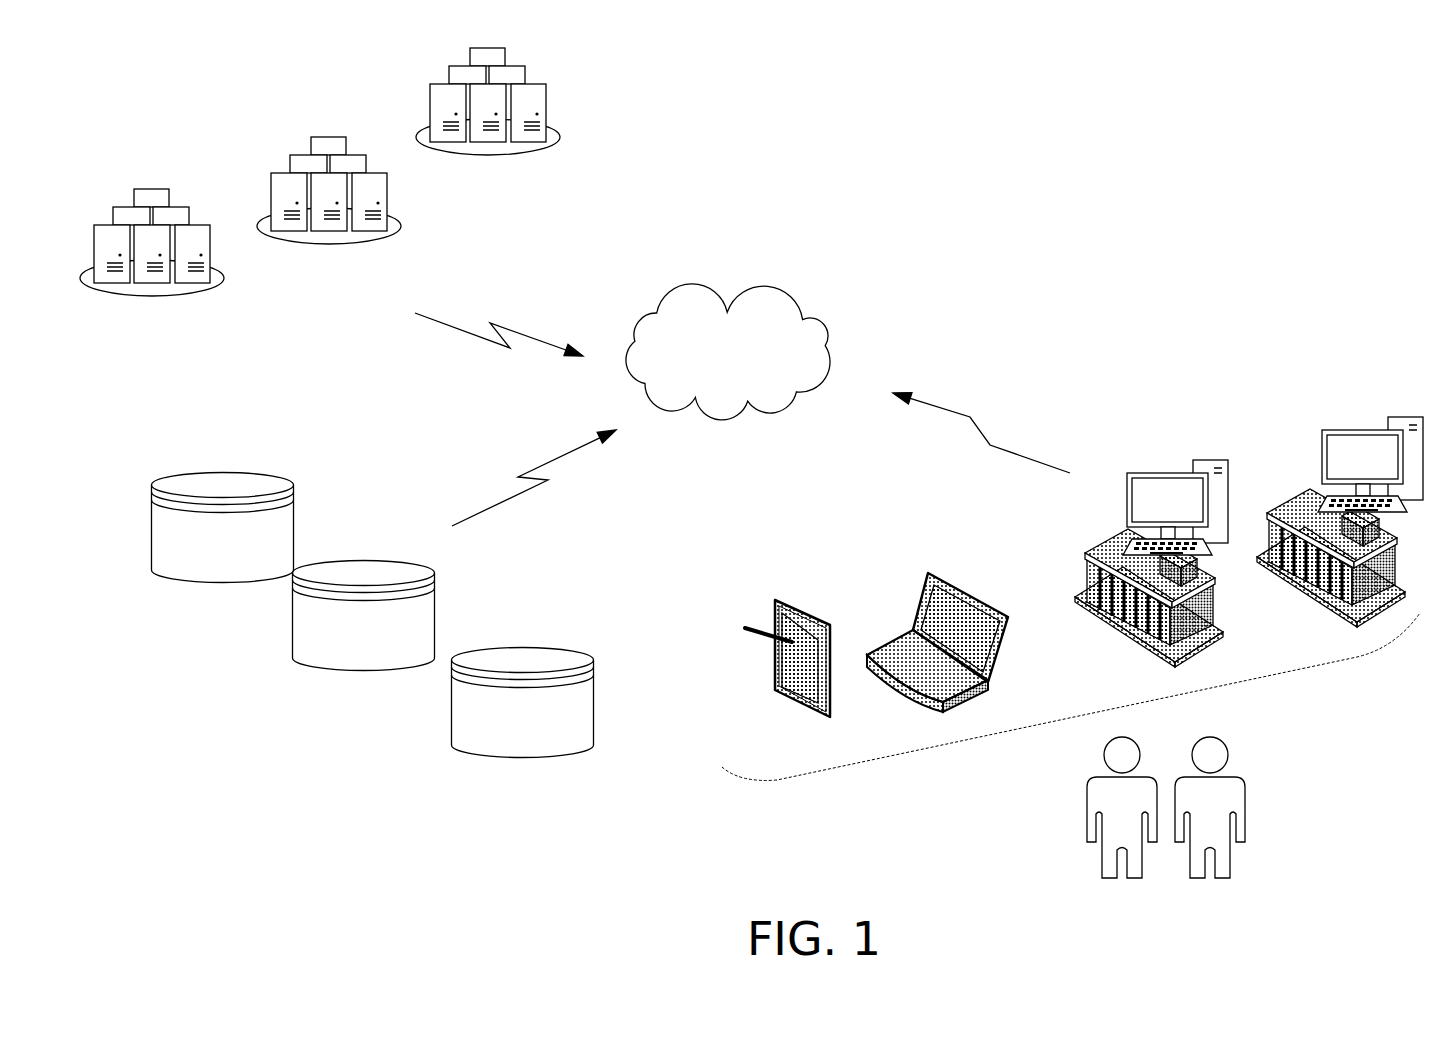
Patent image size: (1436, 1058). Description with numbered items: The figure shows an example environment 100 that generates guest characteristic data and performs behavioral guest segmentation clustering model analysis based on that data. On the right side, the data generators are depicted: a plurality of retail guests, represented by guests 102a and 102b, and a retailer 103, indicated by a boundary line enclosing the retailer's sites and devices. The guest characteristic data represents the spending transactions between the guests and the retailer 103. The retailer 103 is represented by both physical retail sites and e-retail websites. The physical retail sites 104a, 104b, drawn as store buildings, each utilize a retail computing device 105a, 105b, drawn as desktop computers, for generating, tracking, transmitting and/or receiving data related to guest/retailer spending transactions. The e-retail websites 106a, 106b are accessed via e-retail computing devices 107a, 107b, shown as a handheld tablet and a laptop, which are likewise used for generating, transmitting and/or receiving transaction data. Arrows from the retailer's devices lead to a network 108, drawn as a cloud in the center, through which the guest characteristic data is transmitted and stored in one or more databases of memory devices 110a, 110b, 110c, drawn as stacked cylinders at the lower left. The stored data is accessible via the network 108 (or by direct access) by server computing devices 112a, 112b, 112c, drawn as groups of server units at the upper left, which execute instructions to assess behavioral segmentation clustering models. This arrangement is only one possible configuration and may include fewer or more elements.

The environment 100 is at (1002, 184).
The guest 102a is at (1087, 805).
The guest 102b is at (1245, 805).
The retailer 103 is at (1277, 673).
The physical retail site 104a is at (1120, 633).
The physical retail site 104b is at (1317, 605).
The retail computing device 105a is at (1147, 472).
The retail computing device 105b is at (1342, 428).
The e-retail website 106a is at (824, 605).
The e-retail website 106b is at (964, 571).
The e-retail computing device 107a is at (805, 627).
The e-retail computing device 107b is at (937, 611).
The network 108 is at (710, 378).
The memory device 110a is at (198, 553).
The memory device 110b is at (339, 642).
The memory device 110c is at (498, 726).
The server computing devices 112a is at (187, 293).
The server computing devices 112b is at (363, 243).
The server computing devices 112c is at (505, 155).